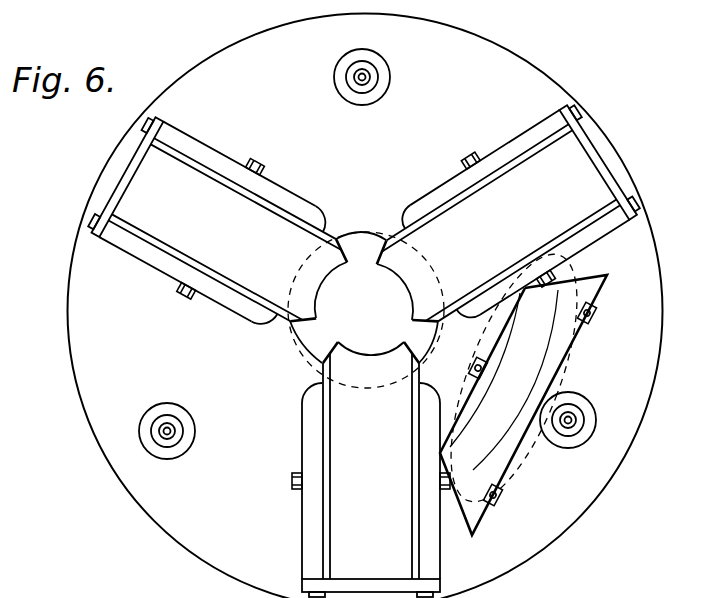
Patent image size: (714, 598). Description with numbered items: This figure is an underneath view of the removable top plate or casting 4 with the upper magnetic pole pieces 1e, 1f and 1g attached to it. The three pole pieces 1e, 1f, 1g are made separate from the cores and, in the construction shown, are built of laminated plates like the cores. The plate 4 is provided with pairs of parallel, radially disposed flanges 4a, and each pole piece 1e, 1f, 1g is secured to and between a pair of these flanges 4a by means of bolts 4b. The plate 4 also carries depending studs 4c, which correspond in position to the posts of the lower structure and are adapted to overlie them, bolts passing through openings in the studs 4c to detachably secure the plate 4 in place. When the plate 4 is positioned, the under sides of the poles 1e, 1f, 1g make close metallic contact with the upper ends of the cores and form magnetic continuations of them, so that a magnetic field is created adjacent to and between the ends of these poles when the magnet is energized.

The upper magnetic pole piece 1e is at (224, 231).
The upper magnetic pole piece 1f is at (501, 224).
The upper magnetic pole piece 1g is at (371, 469).
The top plate 4 is at (657, 288).
The flanges 4a is at (432, 392).
The bolts 4b is at (480, 539).
The depending studs 4c is at (372, 78).